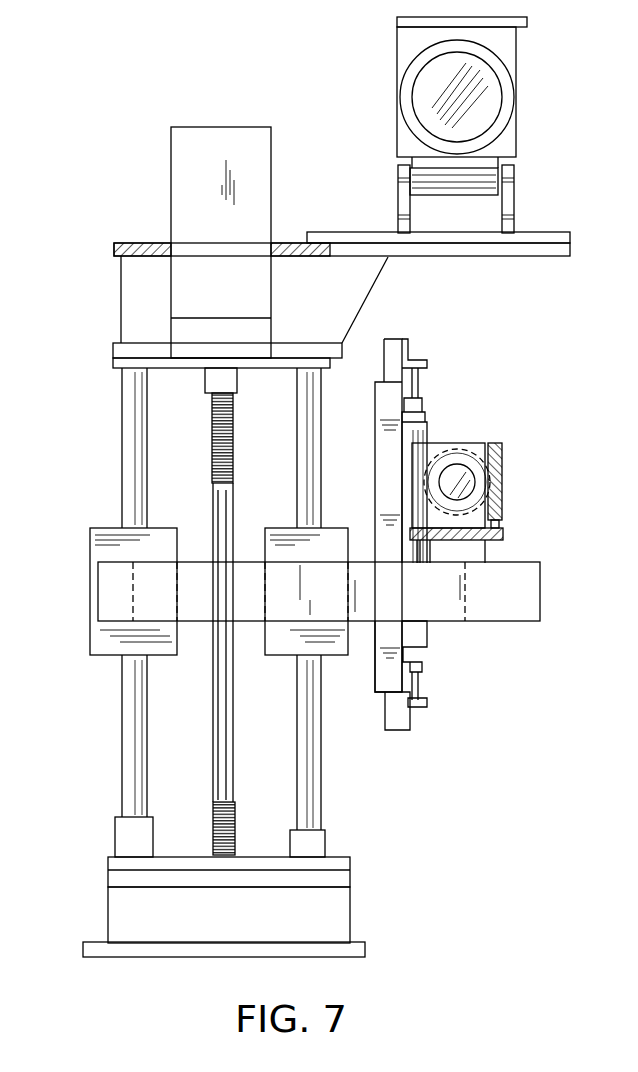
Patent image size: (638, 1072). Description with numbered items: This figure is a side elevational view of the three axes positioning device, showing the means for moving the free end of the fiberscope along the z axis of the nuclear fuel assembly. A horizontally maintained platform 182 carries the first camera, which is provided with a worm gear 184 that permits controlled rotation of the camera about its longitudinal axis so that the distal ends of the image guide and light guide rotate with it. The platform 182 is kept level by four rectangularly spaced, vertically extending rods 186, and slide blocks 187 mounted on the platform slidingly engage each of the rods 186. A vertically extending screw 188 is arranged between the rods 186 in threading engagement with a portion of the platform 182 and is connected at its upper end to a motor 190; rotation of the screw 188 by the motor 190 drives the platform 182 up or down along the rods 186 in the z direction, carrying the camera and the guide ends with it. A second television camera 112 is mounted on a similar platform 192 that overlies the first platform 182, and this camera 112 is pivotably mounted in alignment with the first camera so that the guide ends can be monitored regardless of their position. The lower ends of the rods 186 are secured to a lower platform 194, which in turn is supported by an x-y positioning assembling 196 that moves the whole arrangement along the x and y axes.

The second television camera 112 is at (422, 88).
The platform 182 is at (527, 582).
The worm gear 184 is at (502, 473).
The rods 186 is at (132, 713).
The slide blocks 187 is at (100, 640).
The screw 188 is at (225, 710).
The motor 190 is at (211, 152).
The platform 192 is at (513, 257).
The platform 194 is at (348, 858).
The x-y positioning assembling 196 is at (340, 905).